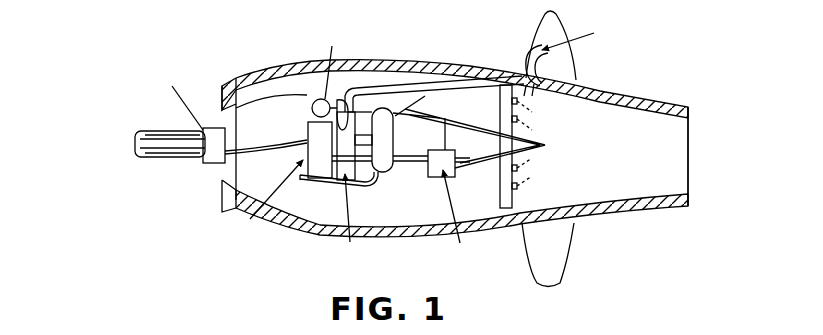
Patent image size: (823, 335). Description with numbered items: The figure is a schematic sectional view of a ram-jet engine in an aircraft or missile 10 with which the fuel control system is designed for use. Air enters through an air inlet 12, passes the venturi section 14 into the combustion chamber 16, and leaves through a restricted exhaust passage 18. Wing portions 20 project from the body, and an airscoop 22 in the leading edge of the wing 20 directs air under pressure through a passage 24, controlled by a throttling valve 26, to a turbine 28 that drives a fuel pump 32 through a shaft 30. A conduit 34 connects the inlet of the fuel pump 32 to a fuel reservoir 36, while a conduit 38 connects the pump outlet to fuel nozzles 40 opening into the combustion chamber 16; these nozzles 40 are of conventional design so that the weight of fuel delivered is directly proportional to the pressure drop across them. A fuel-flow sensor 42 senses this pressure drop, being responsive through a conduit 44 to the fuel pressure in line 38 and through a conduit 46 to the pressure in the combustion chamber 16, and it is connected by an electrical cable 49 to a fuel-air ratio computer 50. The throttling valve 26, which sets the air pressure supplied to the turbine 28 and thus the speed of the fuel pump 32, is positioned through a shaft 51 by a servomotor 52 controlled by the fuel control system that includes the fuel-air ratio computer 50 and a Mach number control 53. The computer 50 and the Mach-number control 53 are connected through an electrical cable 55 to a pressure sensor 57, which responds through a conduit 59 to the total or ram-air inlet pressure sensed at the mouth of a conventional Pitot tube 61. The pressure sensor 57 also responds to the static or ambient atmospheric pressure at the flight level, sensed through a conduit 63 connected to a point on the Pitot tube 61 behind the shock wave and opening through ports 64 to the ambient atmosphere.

The ram-jet engine in an aircraft or missile 10 is at (277, 60).
The air inlet 12 is at (232, 187).
The venturi section 14 is at (292, 213).
The combustion chamber 16 is at (622, 181).
The restricted exhaust passage 18 is at (689, 121).
The wing portions 20 is at (556, 27).
The airscoop 22 is at (522, 50).
The passage 24 is at (536, 97).
The throttling valve 26 is at (378, 106).
The turbine 28 is at (359, 195).
The shaft 30 is at (362, 111).
The fuel pump 32 is at (394, 148).
The conduit 34 is at (368, 166).
The fuel reservoir 36 is at (290, 177).
The conduit 38 is at (416, 127).
The fuel nozzles 40 is at (517, 107).
The fuel-flow sensor 42 is at (455, 176).
The conduit 44 is at (447, 140).
The conduit 46 is at (470, 159).
The electrical cable 49 is at (406, 163).
The fuel-air ratio computer 50 is at (322, 164).
The shaft 51 is at (336, 103).
The servomotor 52 is at (390, 64).
The Mach number control 53 is at (303, 124).
The electrical cable 55 is at (266, 161).
The pressure sensor 57 is at (146, 97).
The conduit 59 is at (175, 131).
The Pitot tube 61 is at (138, 132).
The conduit 63 is at (186, 157).
The ports 64 is at (160, 131).